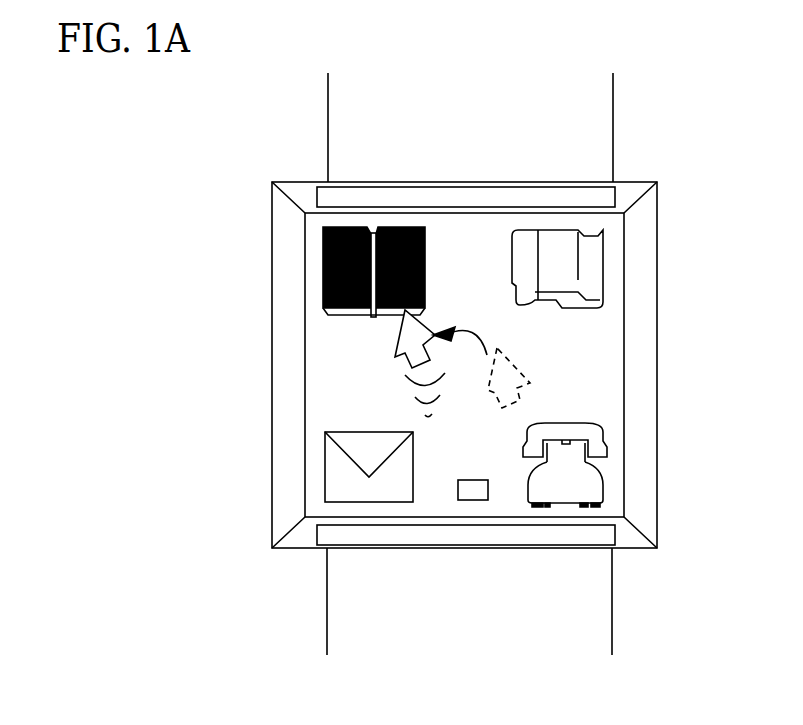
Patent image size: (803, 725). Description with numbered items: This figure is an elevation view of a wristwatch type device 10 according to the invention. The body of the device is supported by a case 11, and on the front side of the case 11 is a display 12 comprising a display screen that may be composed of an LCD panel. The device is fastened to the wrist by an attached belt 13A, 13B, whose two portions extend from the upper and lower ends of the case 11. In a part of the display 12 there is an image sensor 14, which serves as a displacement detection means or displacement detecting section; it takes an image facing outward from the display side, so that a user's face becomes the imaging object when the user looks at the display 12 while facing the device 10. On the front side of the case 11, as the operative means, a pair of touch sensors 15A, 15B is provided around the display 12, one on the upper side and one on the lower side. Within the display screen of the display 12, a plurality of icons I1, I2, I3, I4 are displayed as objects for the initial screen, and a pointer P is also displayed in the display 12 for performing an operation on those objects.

The wristwatch type device 10 is at (634, 186).
The case 11 is at (272, 440).
The display 12 is at (317, 397).
The attached belt 13A is at (328, 128).
The attached belt 13B is at (326, 590).
The image sensor 14 is at (478, 500).
The touch sensor 15A is at (447, 197).
The touch sensor 15B is at (435, 545).
The icon I1 is at (323, 289).
The icon I2 is at (325, 474).
The icon I3 is at (607, 270).
The icon I4 is at (606, 448).
The pointer P is at (425, 330).